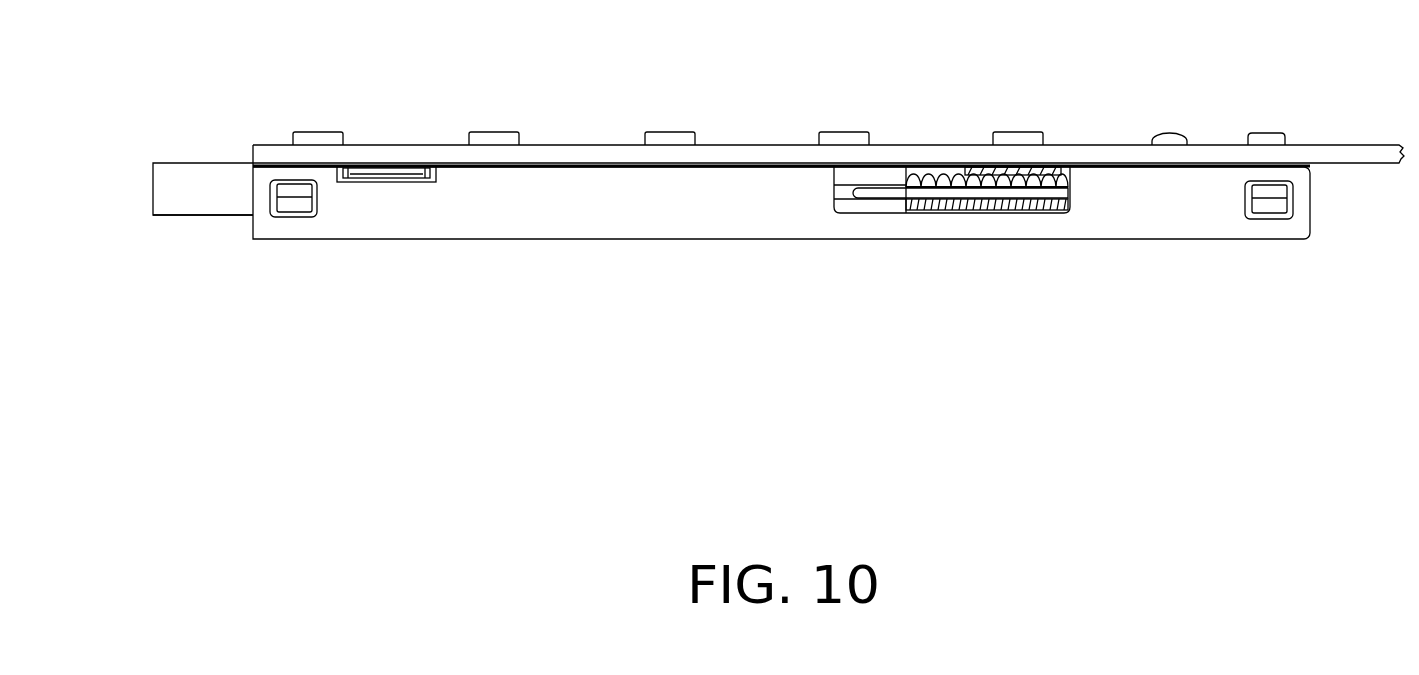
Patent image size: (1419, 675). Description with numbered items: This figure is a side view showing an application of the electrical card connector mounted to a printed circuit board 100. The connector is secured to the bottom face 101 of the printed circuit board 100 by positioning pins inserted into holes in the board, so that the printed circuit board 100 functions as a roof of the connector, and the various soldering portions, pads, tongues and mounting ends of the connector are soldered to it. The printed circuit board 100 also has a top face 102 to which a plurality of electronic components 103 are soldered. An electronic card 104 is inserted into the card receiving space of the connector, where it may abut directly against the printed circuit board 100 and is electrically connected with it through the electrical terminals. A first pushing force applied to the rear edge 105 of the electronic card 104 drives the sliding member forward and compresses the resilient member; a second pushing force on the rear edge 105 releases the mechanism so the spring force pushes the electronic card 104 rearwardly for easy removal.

The printed circuit board 100 is at (773, 190).
The bottom face 101 is at (1338, 166).
The top face 102 is at (1323, 146).
The electronic components 103 is at (315, 137).
The electronic card 104 is at (223, 190).
The rear edge 105 is at (173, 182).